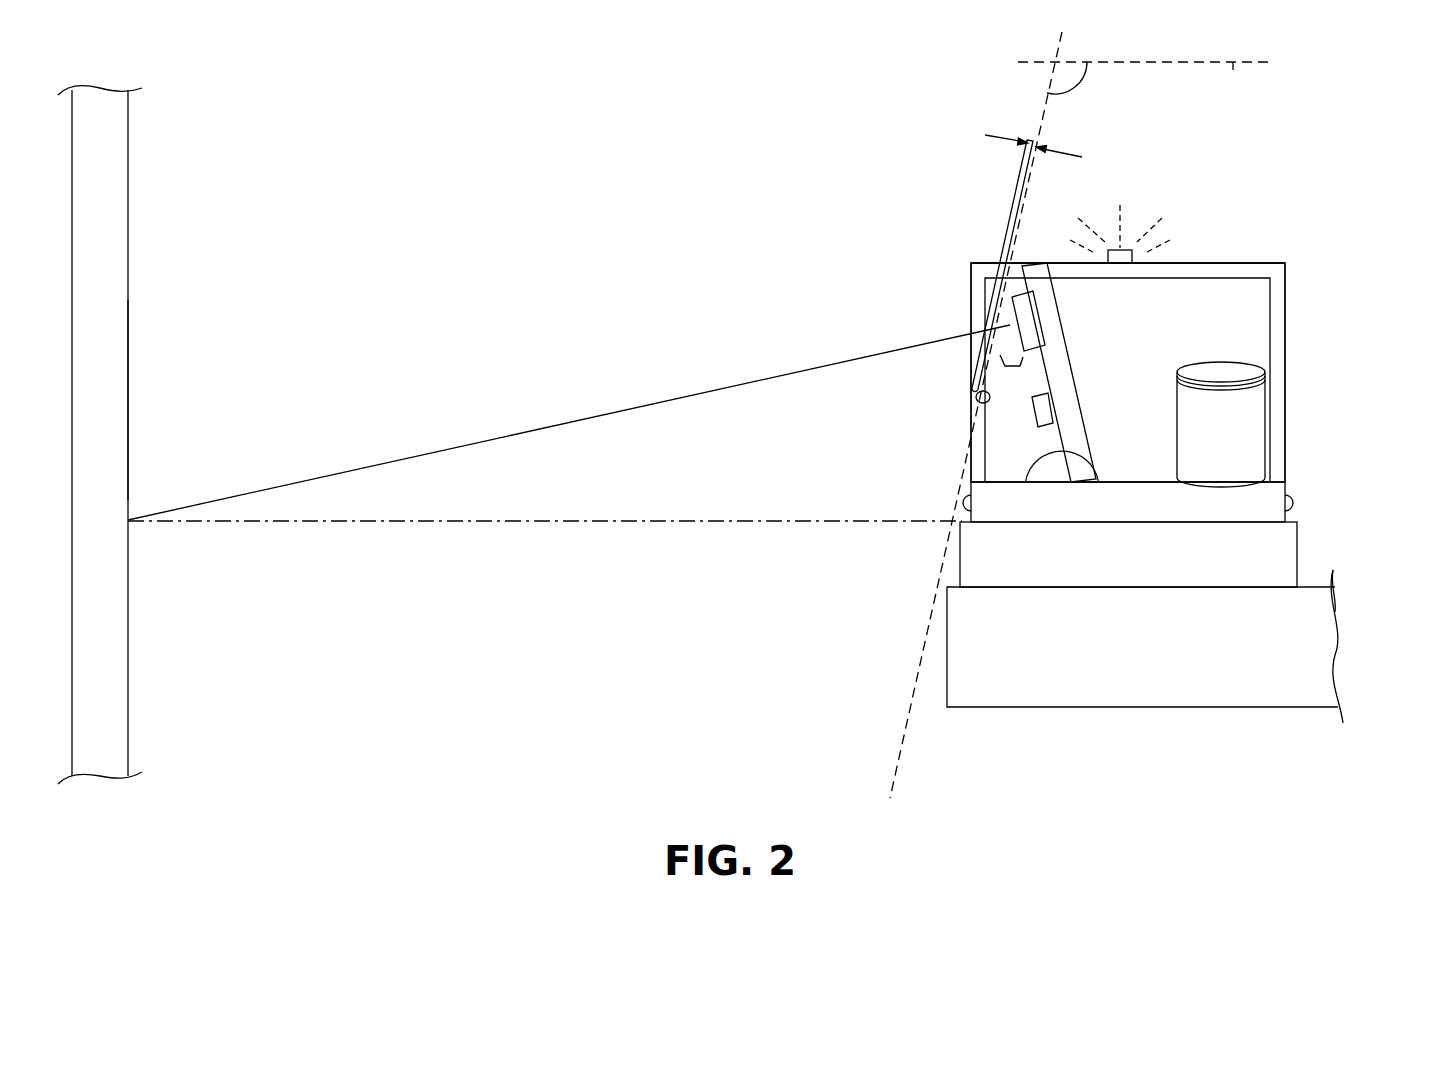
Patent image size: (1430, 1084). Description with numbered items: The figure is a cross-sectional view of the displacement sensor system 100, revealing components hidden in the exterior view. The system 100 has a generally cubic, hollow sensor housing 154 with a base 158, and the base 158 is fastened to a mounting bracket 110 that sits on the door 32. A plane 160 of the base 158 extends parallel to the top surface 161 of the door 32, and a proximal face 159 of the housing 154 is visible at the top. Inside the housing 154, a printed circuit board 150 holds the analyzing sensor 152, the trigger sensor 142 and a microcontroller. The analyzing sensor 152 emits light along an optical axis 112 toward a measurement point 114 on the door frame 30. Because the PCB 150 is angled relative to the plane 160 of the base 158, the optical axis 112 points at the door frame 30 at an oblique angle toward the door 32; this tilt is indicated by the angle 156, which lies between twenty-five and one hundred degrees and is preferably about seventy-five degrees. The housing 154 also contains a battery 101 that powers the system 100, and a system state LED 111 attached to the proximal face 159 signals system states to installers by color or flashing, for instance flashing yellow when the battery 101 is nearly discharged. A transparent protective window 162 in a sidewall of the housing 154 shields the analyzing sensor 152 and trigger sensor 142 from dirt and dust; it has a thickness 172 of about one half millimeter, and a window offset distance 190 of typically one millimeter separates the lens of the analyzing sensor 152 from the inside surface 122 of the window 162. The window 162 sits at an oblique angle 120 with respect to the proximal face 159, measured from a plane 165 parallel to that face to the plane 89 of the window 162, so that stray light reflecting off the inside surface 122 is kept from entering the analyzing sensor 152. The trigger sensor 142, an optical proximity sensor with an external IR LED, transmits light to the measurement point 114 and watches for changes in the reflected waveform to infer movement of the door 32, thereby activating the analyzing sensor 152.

The door frame 30 is at (110, 183).
The door 32 is at (1142, 688).
The plane of the protective window 89 is at (905, 666).
The displacement sensor system 100 is at (940, 183).
The battery 101 is at (1255, 457).
The mounting bracket 110 is at (1278, 547).
The system state LED 111 is at (1123, 257).
The optical axis 112 is at (485, 440).
The measurement point 114 is at (128, 392).
The oblique angle 120 is at (1077, 88).
The inside surface of the window 122 is at (972, 397).
The trigger sensor 142 is at (1047, 408).
The printed circuit board 150 is at (1067, 343).
The analyzing sensor 152 is at (1025, 308).
The sensor housing 154 is at (1280, 337).
The angle 156 is at (1017, 453).
The base 158 is at (1278, 515).
The proximal face 159 is at (1223, 262).
The plane of the base 160 is at (680, 522).
The top surface of door 161 is at (1310, 585).
The protective window 162 is at (997, 305).
The plane parallel to proximal face 165 is at (1233, 70).
The thickness of the window 172 is at (985, 135).
The window offset distance 190 is at (1023, 363).